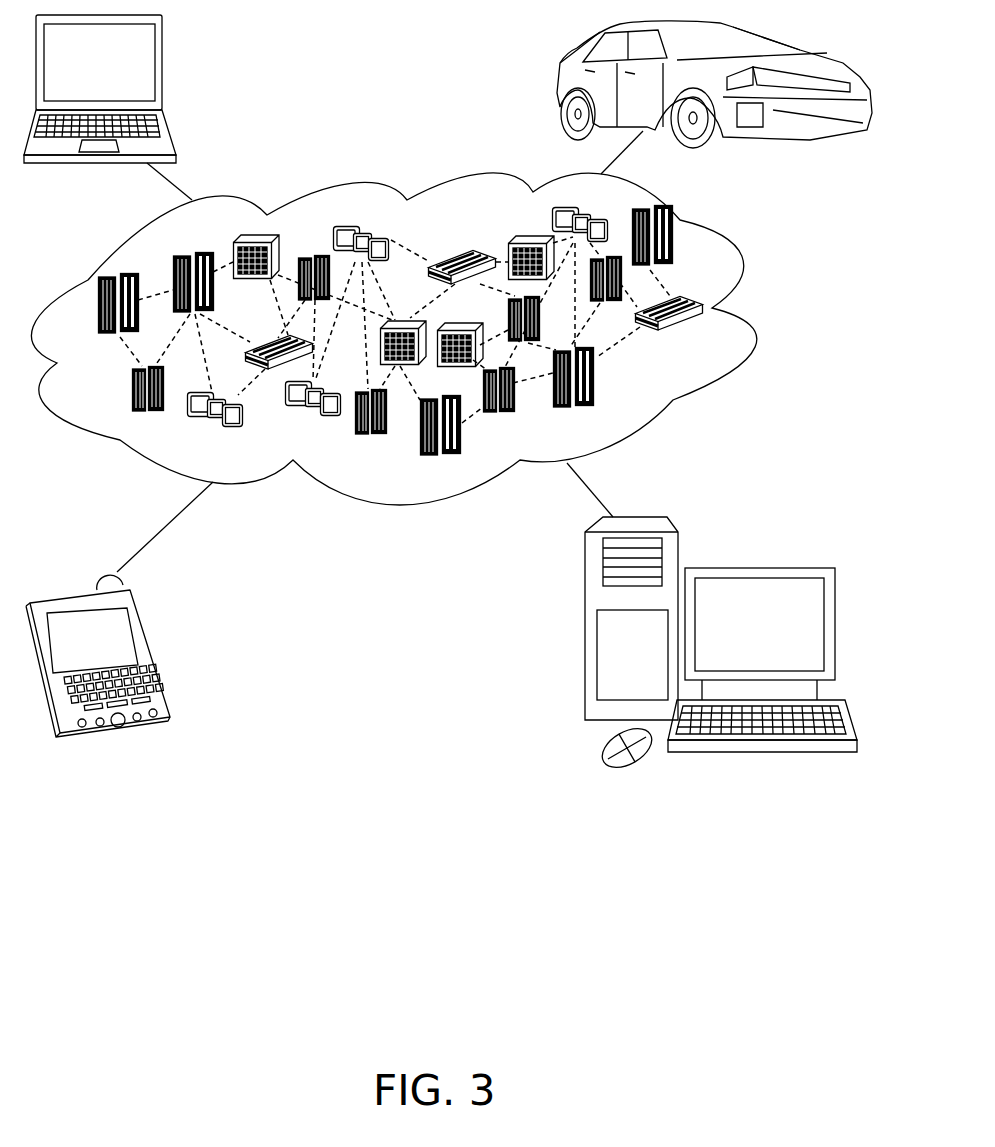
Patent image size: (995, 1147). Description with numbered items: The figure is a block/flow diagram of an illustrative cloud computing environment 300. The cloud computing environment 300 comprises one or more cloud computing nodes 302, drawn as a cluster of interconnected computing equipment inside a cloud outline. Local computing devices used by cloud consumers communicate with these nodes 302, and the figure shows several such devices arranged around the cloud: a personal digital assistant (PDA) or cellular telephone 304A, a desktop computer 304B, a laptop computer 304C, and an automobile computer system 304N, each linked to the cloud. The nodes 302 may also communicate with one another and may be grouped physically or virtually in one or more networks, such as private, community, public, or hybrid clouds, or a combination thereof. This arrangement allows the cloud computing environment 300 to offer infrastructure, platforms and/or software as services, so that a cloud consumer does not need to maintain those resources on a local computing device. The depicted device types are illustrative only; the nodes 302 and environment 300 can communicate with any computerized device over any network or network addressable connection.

The cloud computing environment 300 is at (712, 308).
The cloud computing nodes 302 is at (703, 338).
The personal digital assistant (PDA) or cellular telephone 304A is at (140, 621).
The desktop computer 304B is at (748, 568).
The laptop computer 304C is at (162, 50).
The automobile computer system 304N is at (560, 84).